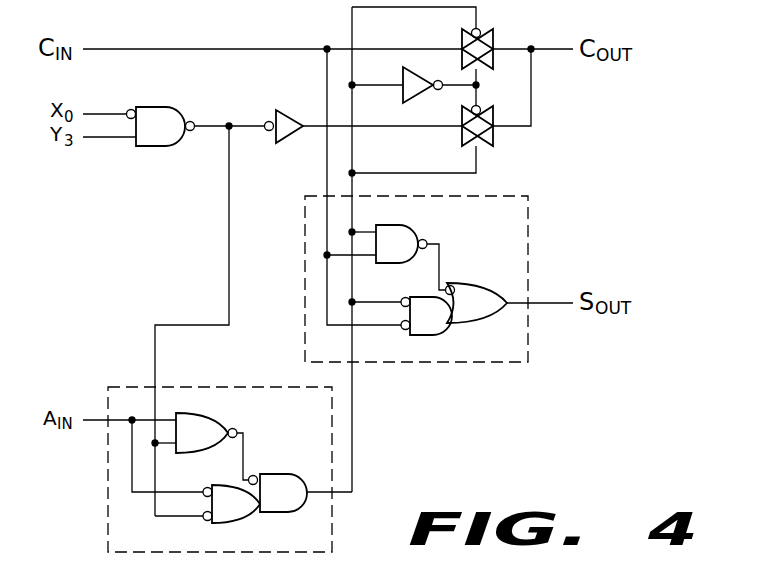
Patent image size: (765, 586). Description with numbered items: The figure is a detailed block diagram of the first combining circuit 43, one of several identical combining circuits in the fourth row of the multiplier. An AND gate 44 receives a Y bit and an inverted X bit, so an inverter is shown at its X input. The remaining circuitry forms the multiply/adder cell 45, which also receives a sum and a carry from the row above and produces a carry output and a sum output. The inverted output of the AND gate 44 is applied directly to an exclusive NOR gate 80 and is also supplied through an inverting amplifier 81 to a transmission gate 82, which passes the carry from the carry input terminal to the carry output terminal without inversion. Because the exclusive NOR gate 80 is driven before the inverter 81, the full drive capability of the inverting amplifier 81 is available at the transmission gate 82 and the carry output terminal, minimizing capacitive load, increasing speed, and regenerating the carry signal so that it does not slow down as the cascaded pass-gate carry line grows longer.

The first combining circuit 43 is at (162, 267).
The AND gate 44 is at (182, 107).
The multiply/adder cell 45 is at (434, 455).
The exclusive NOR gate 80 is at (110, 482).
The inverting amplifier 81 is at (297, 108).
The transmission gate 82 is at (496, 134).